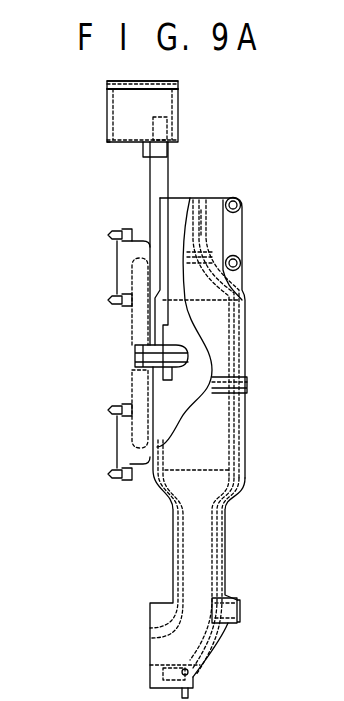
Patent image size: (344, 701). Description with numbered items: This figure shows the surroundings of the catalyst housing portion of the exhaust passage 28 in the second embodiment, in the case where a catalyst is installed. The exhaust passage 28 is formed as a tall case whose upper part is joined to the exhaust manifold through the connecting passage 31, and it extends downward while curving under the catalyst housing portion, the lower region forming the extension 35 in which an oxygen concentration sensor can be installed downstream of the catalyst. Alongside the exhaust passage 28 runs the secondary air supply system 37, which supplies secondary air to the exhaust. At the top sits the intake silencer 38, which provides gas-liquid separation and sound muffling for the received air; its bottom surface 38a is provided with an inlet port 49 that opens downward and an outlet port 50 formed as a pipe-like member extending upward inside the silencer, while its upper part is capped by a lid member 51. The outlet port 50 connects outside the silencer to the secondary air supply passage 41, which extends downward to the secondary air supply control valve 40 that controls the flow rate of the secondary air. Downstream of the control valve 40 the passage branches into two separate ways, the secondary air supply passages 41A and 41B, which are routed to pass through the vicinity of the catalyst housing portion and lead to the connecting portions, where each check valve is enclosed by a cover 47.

The exhaust passage 28 is at (193, 538).
The connecting passage 31 is at (214, 196).
The extension 35 is at (218, 621).
The secondary air supply system 37 is at (157, 488).
The intake silencer 38 is at (127, 107).
The bottom surface 38a is at (108, 143).
The secondary air supply control valve 40 is at (165, 355).
The secondary air supply passage 41 is at (150, 185).
The secondary air supply passage 41A is at (145, 278).
The secondary air supply passage 41B is at (140, 432).
The cover 47 is at (125, 253).
The inlet port 49 is at (143, 150).
The outlet port 50 is at (172, 128).
The lid member 51 is at (160, 81).